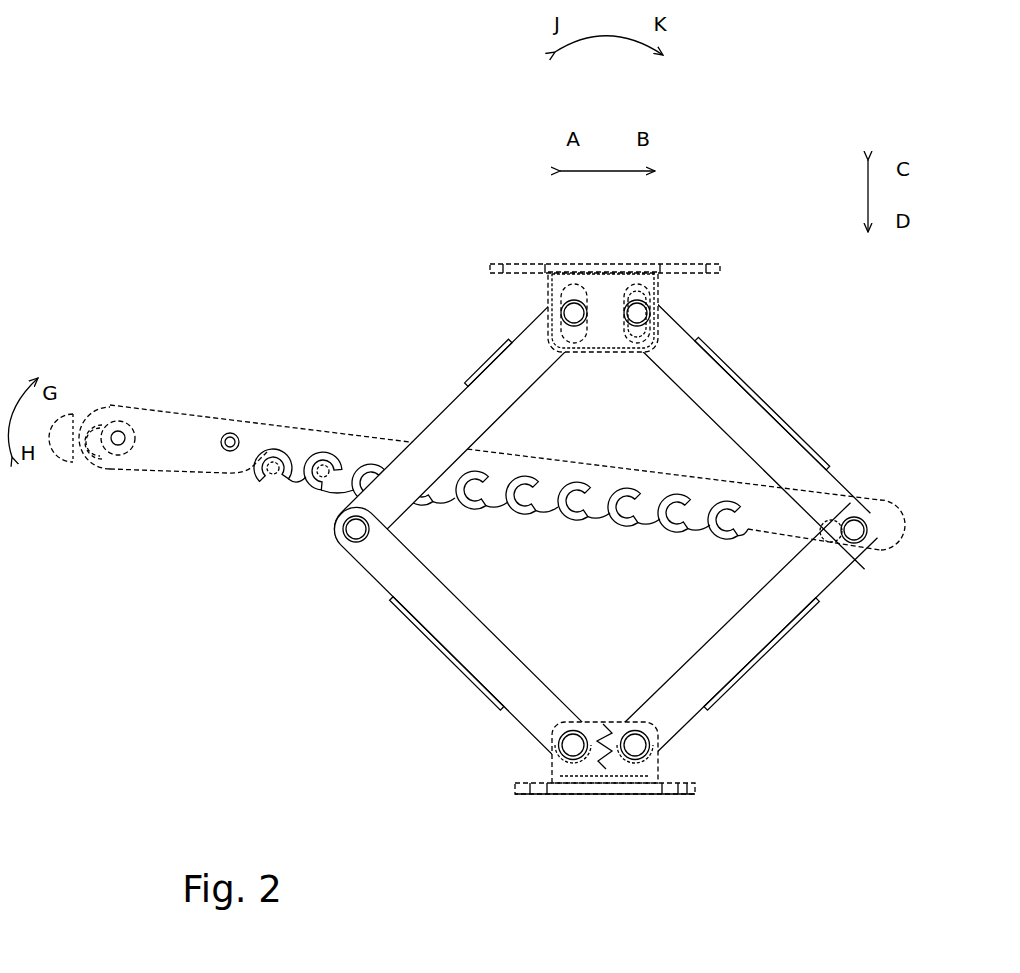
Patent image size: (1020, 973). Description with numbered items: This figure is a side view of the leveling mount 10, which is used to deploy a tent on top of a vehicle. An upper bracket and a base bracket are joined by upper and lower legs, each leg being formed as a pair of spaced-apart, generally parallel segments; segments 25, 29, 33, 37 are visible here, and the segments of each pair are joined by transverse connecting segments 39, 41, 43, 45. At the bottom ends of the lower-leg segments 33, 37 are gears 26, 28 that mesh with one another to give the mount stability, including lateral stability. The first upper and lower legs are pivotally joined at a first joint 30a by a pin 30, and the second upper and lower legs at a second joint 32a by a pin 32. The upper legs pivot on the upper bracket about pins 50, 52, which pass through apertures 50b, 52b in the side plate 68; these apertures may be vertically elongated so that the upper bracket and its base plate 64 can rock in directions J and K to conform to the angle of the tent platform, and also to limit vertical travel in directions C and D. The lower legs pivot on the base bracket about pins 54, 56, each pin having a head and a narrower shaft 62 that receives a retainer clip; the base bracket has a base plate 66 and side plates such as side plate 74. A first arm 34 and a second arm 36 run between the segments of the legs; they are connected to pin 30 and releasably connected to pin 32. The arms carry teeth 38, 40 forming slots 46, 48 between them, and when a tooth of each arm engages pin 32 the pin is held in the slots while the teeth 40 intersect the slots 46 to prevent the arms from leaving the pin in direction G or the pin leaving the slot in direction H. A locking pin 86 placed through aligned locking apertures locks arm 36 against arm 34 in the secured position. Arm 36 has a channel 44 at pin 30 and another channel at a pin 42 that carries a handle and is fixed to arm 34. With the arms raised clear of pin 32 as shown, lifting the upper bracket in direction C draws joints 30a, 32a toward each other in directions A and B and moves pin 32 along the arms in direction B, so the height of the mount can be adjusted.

The leveling mount 10 is at (313, 198).
The segment 25 is at (760, 418).
The gear 26 is at (605, 762).
The gear 28 is at (600, 722).
The segment 29 is at (472, 404).
The pin 30 is at (857, 528).
The first joint 30a is at (879, 437).
The pin 32 is at (358, 531).
The second joint 32a is at (318, 614).
The segment 33 is at (760, 625).
The first arm 34 is at (247, 470).
The second arm 36 is at (178, 432).
The segment 37 is at (438, 618).
The teeth 38 is at (277, 462).
The connecting segment 39 is at (735, 365).
The teeth 40 is at (292, 470).
The connecting segment 41 is at (480, 352).
The pin 42 is at (118, 440).
The connecting segment 43 is at (765, 668).
The channel 44 is at (105, 436).
The connecting segment 45 is at (447, 662).
The slots 46 is at (347, 472).
The slots 48 is at (268, 484).
The pin 50 is at (642, 320).
The aperture 50b is at (639, 283).
The pin 52 is at (565, 318).
The aperture 52b is at (565, 284).
The pin 54 is at (640, 747).
The pin 56 is at (571, 745).
The shaft 62 is at (577, 750).
The base plate 64 is at (629, 285).
The base plate 66 is at (690, 794).
The side plate 68 is at (605, 289).
The side plate 74 is at (660, 768).
The locking pin 86 is at (229, 433).